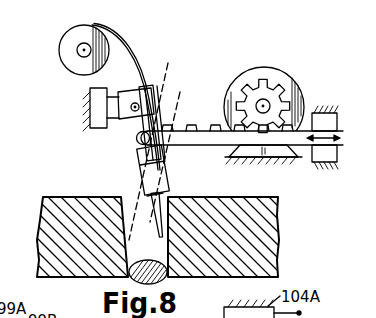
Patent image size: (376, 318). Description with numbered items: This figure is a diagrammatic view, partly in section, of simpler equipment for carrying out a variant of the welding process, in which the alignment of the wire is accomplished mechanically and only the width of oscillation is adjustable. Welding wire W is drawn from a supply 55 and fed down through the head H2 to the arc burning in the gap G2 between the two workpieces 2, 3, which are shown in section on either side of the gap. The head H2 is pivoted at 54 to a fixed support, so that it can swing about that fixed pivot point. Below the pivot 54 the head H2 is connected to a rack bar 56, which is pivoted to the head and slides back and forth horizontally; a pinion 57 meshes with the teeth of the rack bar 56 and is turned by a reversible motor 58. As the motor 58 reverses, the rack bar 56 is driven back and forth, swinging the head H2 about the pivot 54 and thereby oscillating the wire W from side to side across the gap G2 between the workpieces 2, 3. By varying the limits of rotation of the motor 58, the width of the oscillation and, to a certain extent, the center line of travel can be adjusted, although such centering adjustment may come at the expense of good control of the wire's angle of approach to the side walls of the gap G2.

The wire supply 55 is at (66, 43).
The wire W is at (127, 49).
The pivot 54 is at (150, 106).
The head H2 is at (128, 115).
The rack bar 56 is at (184, 131).
The pinion 57 is at (284, 107).
The reversible motor 58 is at (262, 68).
The first workpiece 2 is at (48, 233).
The second workpiece 3 is at (258, 247).
The gap G2 is at (167, 203).